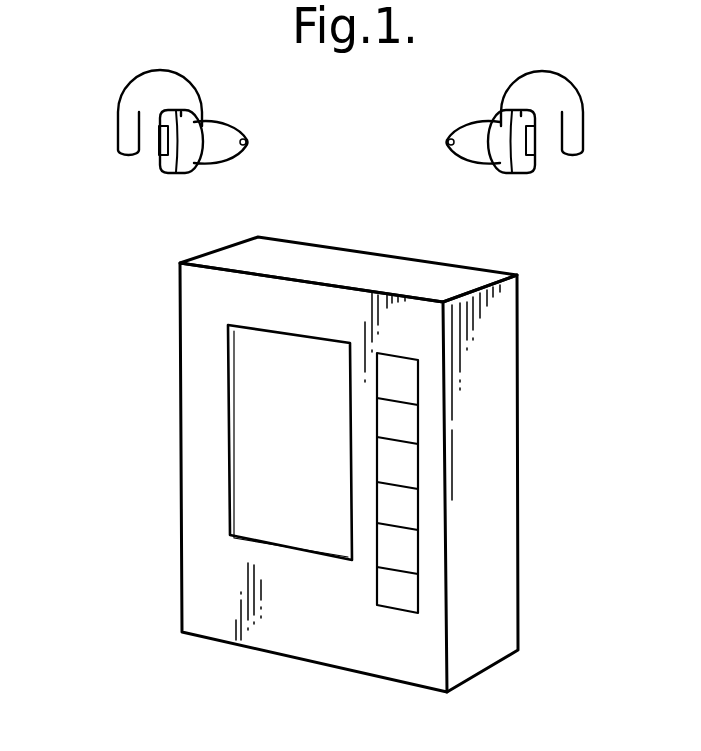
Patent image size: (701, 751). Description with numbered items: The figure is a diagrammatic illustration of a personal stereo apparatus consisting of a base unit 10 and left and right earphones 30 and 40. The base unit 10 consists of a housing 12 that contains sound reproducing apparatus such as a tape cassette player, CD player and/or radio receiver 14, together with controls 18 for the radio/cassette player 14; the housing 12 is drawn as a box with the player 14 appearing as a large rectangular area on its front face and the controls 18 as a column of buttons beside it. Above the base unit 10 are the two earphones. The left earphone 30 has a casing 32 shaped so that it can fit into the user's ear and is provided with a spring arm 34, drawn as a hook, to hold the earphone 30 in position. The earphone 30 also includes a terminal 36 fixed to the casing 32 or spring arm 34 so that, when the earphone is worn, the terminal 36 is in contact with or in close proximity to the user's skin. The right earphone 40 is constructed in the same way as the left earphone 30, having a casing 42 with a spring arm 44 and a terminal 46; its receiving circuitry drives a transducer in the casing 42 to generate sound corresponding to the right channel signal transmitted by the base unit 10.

The base unit 10 is at (503, 387).
The housing 12 is at (197, 553).
The radio/cassette player 14 is at (243, 393).
The controls 18 is at (402, 510).
The left earphone 30 is at (205, 120).
The casing 32 is at (205, 162).
The spring arm 34 is at (125, 105).
The terminal 36 is at (160, 155).
The right earphone 40 is at (492, 117).
The casing 42 is at (495, 163).
The spring arm 44 is at (567, 105).
The terminal 46 is at (535, 145).